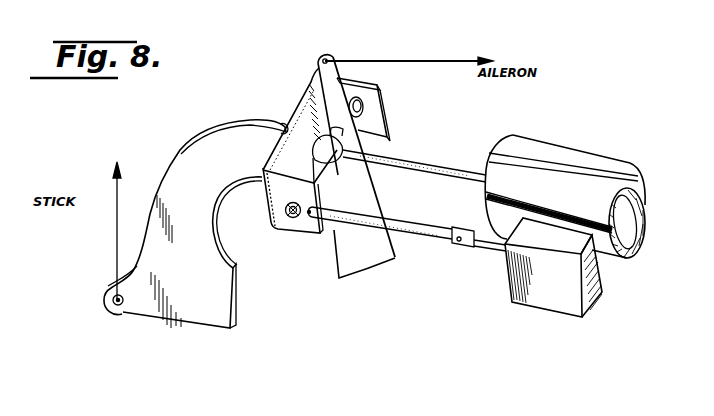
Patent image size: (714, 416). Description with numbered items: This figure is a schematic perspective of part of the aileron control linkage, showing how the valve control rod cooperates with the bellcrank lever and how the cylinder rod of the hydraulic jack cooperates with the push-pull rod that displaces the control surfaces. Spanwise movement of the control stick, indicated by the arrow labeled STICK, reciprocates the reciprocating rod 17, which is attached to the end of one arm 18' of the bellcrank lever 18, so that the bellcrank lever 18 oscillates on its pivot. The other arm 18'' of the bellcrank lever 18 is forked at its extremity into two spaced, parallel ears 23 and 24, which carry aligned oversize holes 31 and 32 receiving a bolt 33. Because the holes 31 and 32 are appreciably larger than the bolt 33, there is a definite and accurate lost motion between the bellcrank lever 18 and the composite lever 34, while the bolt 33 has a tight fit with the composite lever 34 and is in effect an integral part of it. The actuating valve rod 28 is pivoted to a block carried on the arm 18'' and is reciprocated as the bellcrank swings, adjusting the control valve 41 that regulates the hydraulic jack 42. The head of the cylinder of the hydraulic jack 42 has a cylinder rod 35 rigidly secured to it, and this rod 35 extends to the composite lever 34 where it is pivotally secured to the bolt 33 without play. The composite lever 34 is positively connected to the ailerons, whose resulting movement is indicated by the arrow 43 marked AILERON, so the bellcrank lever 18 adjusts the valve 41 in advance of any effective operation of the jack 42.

The reciprocating rod 17 is at (115, 236).
The bellcrank lever 18 is at (195, 218).
The arm of bellcrank lever 18' is at (99, 336).
The other arm of bellcrank lever 18'' is at (268, 101).
The ear 23 is at (309, 238).
The ear 24 is at (374, 127).
The actuating valve rod 28 is at (431, 238).
The oversize hole 31 is at (293, 202).
The oversize hole 32 is at (367, 102).
The bolt 33 is at (284, 215).
The composite lever 34 is at (330, 86).
The cylinder rod 35 is at (449, 170).
The control valve 41 is at (515, 276).
The hydraulic jack 42 is at (558, 153).
The aileron movement arrow 43 is at (430, 57).